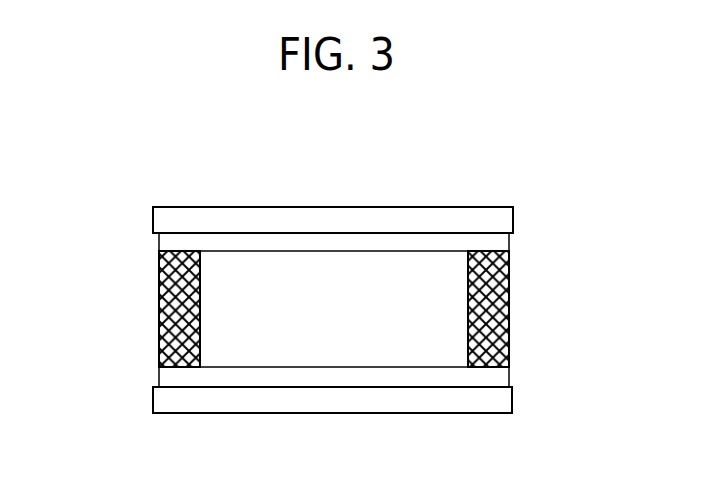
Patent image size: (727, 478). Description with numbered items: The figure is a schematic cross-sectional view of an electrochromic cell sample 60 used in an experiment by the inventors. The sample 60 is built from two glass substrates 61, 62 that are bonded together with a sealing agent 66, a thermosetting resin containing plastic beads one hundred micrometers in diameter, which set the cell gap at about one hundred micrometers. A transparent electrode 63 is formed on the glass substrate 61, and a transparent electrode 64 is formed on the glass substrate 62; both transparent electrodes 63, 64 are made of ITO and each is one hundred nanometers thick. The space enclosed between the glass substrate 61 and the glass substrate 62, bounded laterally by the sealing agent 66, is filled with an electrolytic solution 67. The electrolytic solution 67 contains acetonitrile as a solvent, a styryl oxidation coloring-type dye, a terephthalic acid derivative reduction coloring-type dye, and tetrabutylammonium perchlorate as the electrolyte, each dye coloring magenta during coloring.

The electrochromic (EC) cell sample 60 is at (543, 165).
The glass substrate 61 is at (500, 397).
The glass substrate 62 is at (500, 222).
The transparent electrode 63 is at (170, 375).
The transparent electrode 64 is at (170, 243).
The sealing agent 66 is at (492, 282).
The electrolytic solution 67 is at (340, 283).